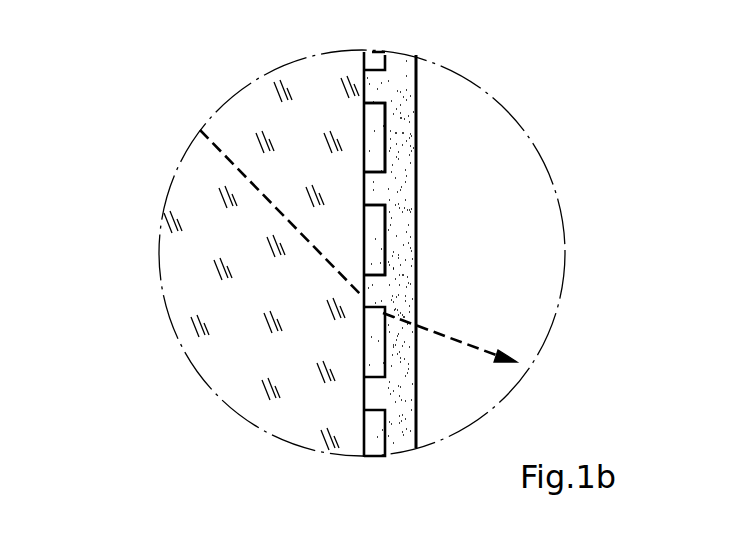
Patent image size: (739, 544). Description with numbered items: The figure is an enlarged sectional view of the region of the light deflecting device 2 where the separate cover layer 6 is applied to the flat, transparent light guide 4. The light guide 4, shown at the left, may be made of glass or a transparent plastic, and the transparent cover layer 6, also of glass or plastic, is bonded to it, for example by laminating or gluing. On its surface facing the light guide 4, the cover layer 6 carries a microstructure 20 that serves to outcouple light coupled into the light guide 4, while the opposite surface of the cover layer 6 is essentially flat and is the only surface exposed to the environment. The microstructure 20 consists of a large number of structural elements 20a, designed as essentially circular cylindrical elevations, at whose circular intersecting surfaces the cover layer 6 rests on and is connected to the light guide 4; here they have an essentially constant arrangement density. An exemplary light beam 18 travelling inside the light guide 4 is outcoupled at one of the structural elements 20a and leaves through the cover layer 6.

The light deflecting device 2 is at (450, 292).
The light guide 4 is at (233, 348).
The cover layer 6 is at (400, 193).
The light beam 18 is at (230, 160).
The microstructure 20 is at (352, 398).
The structural elements 20a is at (368, 168).